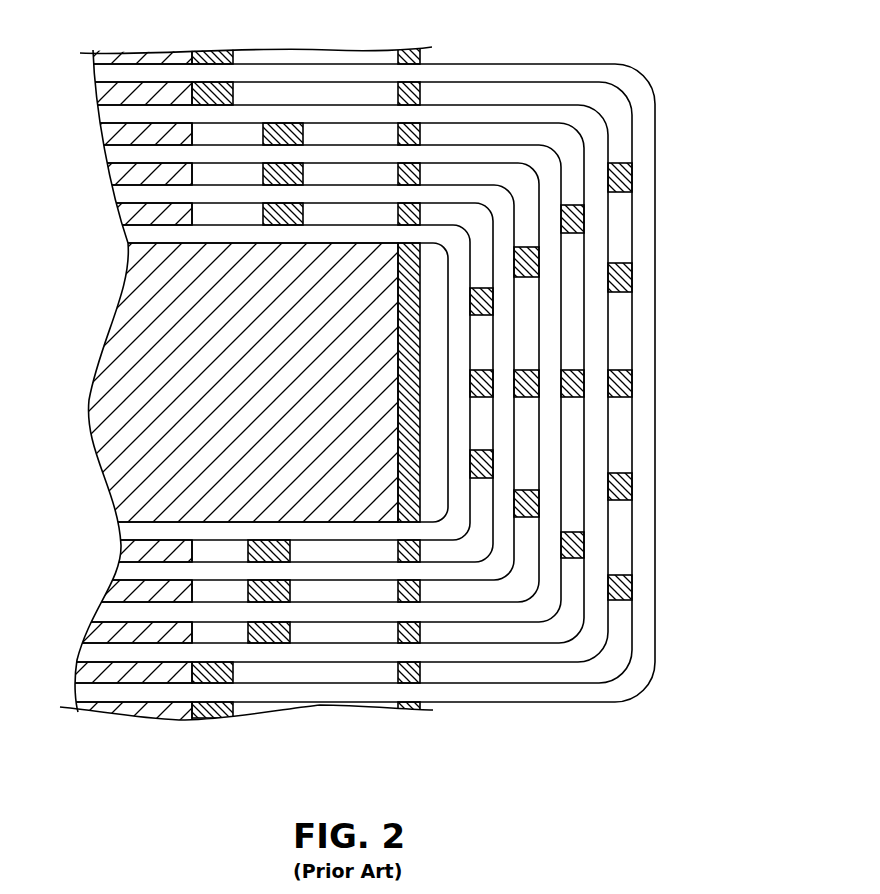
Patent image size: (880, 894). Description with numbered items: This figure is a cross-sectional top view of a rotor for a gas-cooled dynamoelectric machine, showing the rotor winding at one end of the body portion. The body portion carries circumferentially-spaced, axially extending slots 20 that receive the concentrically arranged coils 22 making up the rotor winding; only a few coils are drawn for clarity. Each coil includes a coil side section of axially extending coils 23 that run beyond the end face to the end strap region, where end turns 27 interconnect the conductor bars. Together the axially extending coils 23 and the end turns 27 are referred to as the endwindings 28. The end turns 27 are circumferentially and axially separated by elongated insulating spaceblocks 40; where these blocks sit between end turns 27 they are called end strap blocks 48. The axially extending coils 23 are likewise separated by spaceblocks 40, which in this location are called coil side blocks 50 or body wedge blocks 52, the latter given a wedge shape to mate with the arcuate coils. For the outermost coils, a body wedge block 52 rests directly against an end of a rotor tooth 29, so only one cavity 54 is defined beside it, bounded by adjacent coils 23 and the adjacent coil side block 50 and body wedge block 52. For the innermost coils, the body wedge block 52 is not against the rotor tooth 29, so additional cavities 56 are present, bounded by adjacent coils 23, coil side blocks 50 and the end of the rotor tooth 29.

The slots 20 is at (147, 210).
The coils 22 is at (133, 197).
The axially extending coils 23 is at (233, 197).
The end turns 27 is at (645, 660).
The endwindings 28 is at (690, 68).
The rotor tooth 29 is at (118, 550).
The spaceblocks 40 is at (489, 407).
The end strap block 48 is at (585, 540).
The coil side blocks 50 is at (418, 585).
The body wedge blocks 52 is at (295, 603).
The cavities 54 is at (337, 585).
The cavities 56 is at (210, 587).